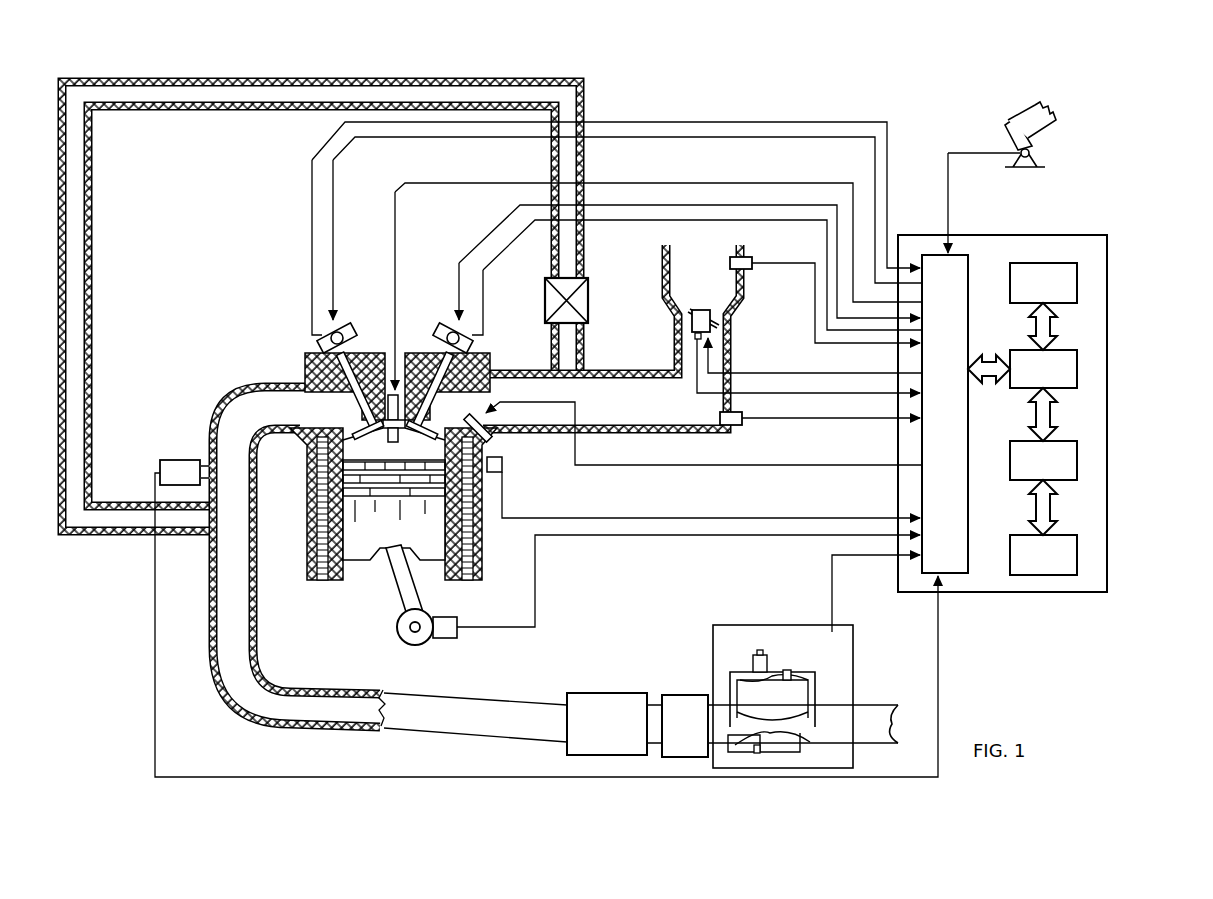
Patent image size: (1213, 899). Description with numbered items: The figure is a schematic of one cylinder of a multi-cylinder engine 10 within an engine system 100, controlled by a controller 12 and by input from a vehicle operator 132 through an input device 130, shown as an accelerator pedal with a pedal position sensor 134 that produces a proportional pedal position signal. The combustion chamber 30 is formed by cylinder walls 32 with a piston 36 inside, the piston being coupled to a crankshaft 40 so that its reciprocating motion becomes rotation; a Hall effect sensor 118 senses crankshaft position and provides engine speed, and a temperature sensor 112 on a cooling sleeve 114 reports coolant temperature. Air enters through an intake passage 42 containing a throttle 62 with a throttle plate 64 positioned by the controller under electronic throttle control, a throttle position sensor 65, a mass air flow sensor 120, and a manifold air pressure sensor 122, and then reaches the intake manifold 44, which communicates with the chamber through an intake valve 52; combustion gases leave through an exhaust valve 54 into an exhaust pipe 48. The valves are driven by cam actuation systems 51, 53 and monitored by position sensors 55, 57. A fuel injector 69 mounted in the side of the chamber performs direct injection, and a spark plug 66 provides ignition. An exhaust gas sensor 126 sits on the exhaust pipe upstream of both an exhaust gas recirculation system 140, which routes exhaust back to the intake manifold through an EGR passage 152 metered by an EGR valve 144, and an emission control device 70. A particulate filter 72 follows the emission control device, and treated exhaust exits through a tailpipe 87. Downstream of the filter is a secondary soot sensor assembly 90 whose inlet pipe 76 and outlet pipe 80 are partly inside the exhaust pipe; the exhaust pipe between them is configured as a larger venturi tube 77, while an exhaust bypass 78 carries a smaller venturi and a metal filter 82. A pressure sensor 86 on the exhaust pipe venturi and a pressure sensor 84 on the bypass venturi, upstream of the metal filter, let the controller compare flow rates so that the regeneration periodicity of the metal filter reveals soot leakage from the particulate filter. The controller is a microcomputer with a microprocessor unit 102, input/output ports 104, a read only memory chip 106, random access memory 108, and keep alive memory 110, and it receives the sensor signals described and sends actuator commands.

The engine 10 is at (245, 307).
The controller 12 is at (1107, 236).
The combustion chamber 30 is at (314, 530).
The cylinder walls 32 is at (340, 582).
The piston 36 is at (385, 532).
The crankshaft 40 is at (635, 604).
The intake passage 42 is at (716, 290).
The intake manifold 44 is at (656, 418).
The exhaust pipe 48 is at (473, 716).
The cam actuation system 51 is at (450, 325).
The intake valve 52 is at (596, 293).
The cam actuation system 53 is at (342, 325).
The exhaust valve 54 is at (350, 392).
The position sensor 55 is at (472, 330).
The position sensor 57 is at (318, 334).
The throttle 62 is at (718, 318).
The throttle plate 64 is at (690, 316).
The throttle position sensor 65 is at (696, 337).
The spark plug 66 is at (395, 390).
The fuel injector 69 is at (486, 438).
The emission control device 70 is at (614, 724).
The particulate filter 72 is at (780, 726).
The inlet pipe 76 is at (738, 702).
The venturi tube 77 is at (768, 680).
The exhaust bypass 78 is at (745, 672).
The outlet pipe 80 is at (815, 697).
The metal filter 82 is at (788, 671).
The pressure sensor 84 is at (762, 655).
The pressure sensor 86 is at (758, 752).
The tailpipe 87 is at (888, 704).
The secondary soot sensor assembly 90 is at (738, 622).
The engine system 100 is at (1137, 56).
The microprocessor unit 102 is at (1078, 368).
The input/output ports 104 is at (968, 262).
The read only memory chip 106 is at (1078, 282).
The random access memory 108 is at (1078, 460).
The keep alive memory 110 is at (1078, 554).
The temperature sensor 112 is at (498, 472).
The cooling sleeve 114 is at (478, 545).
The Hall effect sensor 118 is at (448, 638).
The mass air flow sensor 120 is at (746, 258).
The manifold air pressure sensor 122 is at (736, 426).
The exhaust gas sensor 126 is at (160, 466).
The input device 130 is at (1012, 128).
The vehicle operator 132 is at (1053, 170).
The pedal position sensor 134 is at (1040, 158).
The exhaust gas recirculation system 140 is at (450, 60).
The EGR valve 144 is at (590, 302).
The EGR passage 152 is at (312, 80).